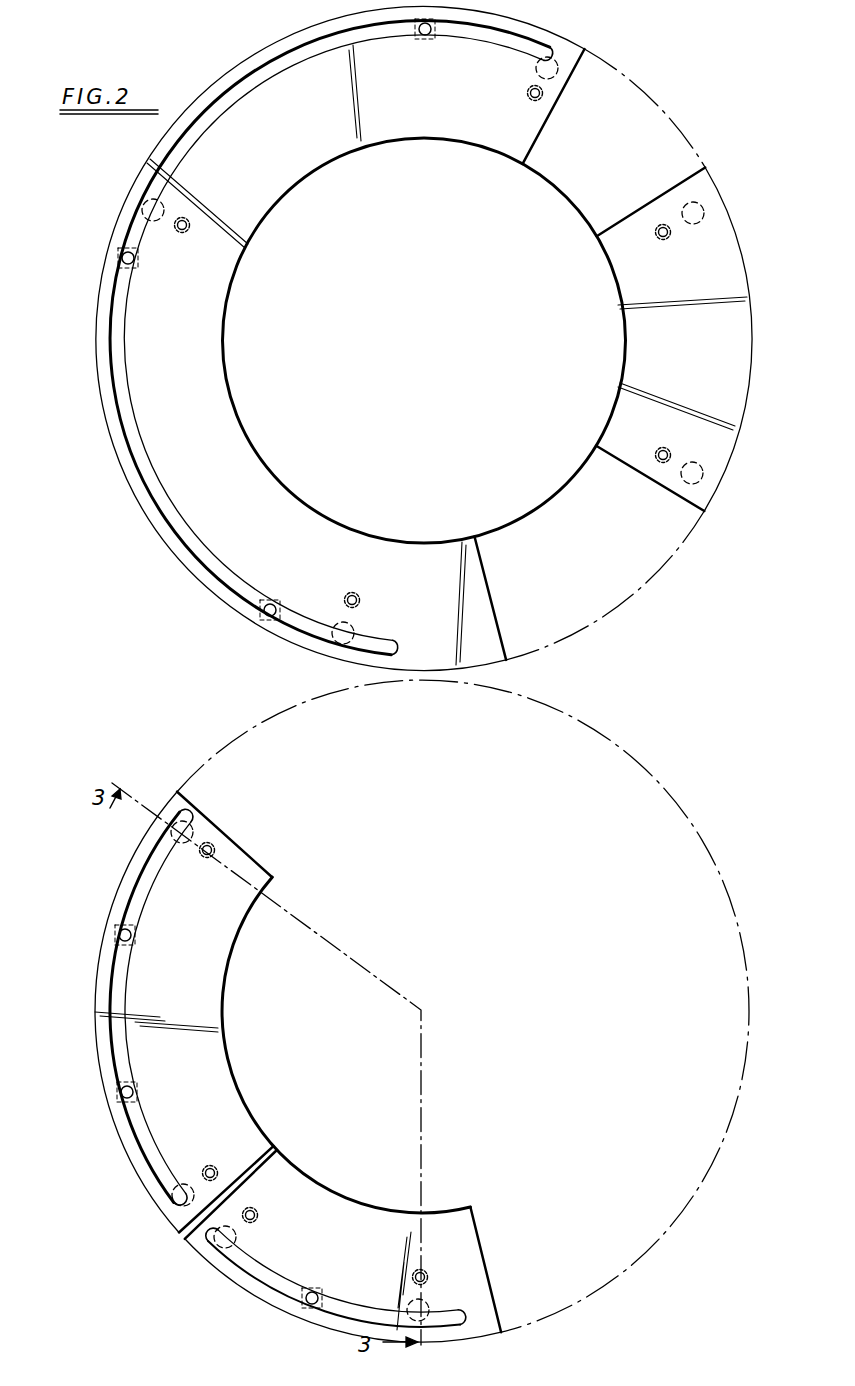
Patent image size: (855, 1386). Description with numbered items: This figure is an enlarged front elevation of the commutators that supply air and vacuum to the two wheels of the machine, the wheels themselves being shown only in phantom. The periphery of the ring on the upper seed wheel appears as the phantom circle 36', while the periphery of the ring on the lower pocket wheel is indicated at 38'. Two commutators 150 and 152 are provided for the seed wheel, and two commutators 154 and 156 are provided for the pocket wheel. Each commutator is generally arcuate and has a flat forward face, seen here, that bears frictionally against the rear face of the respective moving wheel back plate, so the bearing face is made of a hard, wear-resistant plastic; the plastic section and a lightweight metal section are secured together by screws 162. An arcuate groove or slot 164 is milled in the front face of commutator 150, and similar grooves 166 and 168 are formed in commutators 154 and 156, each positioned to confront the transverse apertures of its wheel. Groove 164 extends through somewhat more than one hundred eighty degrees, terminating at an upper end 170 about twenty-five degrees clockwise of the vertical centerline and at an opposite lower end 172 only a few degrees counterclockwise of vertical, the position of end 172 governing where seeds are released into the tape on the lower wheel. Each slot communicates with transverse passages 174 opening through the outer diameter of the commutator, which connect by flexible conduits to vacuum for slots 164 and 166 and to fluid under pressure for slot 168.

The periphery of ring on seed wheel 36' is at (607, 354).
The periphery of ring on pocket wheel 38' is at (485, 1006).
The commutator 150 is at (306, 528).
The commutator 152 is at (627, 377).
The commutator 154 is at (222, 1090).
The commutator 156 is at (343, 1246).
The screws 162 is at (540, 96).
The arcuate groove or slot 164 is at (376, 338).
The slot 166 is at (148, 1137).
The slot 168 is at (275, 1278).
The end of groove 170 is at (553, 56).
The opposite end of groove 172 is at (394, 651).
The transverse passages 174 is at (424, 42).